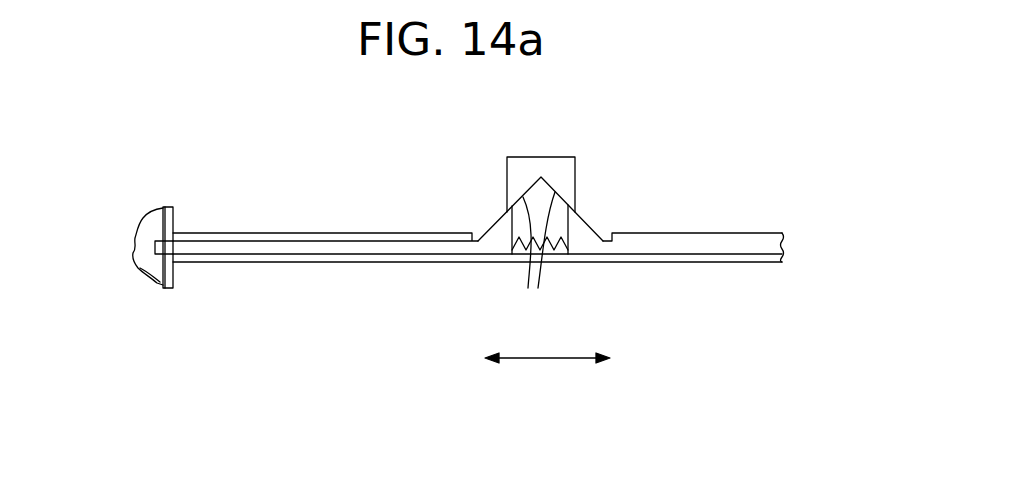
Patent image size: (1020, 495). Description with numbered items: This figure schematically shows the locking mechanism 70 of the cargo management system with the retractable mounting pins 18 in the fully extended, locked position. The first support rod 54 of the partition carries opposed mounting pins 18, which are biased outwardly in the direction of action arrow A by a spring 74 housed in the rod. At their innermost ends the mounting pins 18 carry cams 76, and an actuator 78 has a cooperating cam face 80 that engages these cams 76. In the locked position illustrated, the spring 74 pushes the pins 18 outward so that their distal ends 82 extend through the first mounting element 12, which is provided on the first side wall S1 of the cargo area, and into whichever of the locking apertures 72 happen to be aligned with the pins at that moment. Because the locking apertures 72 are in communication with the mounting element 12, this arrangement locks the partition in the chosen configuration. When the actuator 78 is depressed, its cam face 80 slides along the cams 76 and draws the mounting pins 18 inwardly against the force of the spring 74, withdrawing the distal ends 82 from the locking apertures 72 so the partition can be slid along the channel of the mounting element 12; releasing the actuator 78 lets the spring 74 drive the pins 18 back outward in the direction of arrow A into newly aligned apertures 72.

The locking mechanism 70 is at (283, 160).
The first side wall S1 is at (153, 210).
The distal ends 82 is at (157, 249).
The locking apertures 72 is at (153, 273).
The first mounting element 12 is at (170, 232).
The mounting pins 18 is at (312, 247).
The cams 76 is at (492, 225).
The actuator 78 is at (547, 157).
The spring 74 is at (555, 247).
The cam face 80 is at (537, 256).
The first support rod 54 is at (720, 262).
The action arrow A is at (555, 358).